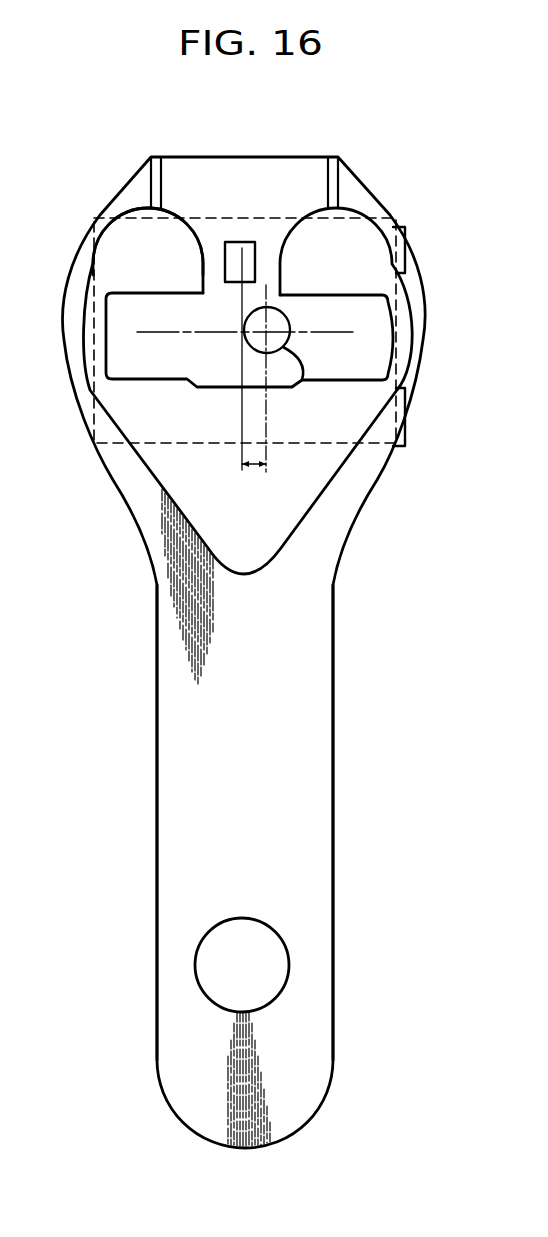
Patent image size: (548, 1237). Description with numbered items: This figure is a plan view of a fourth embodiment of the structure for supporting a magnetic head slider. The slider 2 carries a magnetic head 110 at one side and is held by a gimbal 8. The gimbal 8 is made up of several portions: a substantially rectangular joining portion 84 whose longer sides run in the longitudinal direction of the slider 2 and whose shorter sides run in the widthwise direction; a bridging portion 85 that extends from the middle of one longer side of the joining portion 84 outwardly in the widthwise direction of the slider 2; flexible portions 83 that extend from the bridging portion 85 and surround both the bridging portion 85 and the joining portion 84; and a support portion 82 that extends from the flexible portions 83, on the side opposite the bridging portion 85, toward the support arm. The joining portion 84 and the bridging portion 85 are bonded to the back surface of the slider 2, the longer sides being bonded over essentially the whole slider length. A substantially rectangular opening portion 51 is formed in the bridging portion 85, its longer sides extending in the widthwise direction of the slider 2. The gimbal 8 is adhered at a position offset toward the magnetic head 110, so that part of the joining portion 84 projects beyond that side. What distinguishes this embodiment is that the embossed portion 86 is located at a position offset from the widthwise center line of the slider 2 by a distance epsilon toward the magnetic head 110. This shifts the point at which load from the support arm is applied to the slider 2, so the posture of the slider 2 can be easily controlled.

The slider 2 is at (127, 263).
The gimbal 8 is at (271, 637).
The opening portion 51 is at (252, 242).
The support portion 82 is at (327, 741).
The flexible portions 83 is at (423, 352).
The joining portion 84 is at (398, 297).
The bridging portion 85 is at (210, 247).
The embossed portion 86 is at (302, 381).
The magnetic head 110 is at (403, 228).